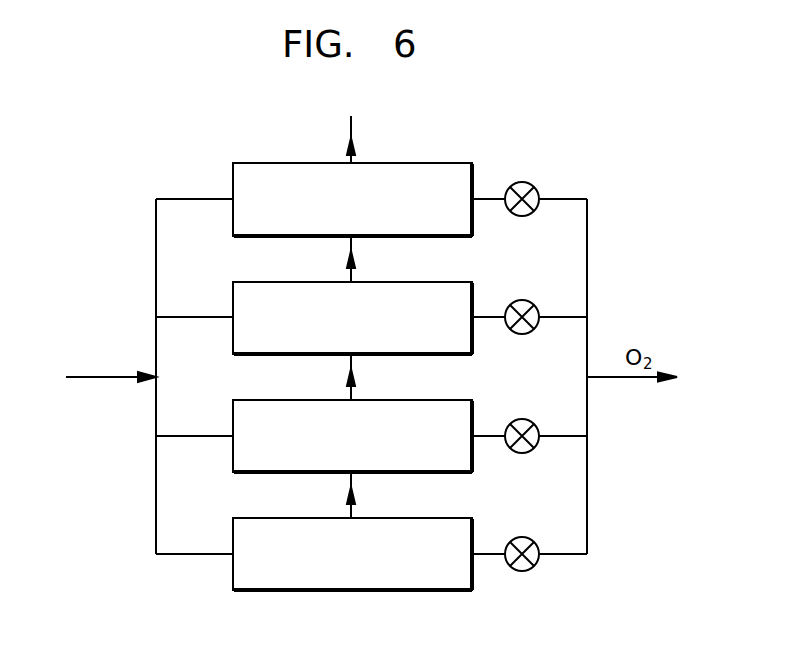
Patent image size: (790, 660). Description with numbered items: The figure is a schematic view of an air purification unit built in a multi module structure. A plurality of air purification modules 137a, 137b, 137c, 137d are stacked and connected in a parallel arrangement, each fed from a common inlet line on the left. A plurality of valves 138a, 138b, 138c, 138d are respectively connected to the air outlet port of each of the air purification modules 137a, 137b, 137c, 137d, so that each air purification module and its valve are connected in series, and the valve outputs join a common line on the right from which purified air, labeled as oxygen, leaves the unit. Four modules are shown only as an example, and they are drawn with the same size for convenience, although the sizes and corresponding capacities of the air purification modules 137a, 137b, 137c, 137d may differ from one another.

The air purification module 137a is at (388, 518).
The air purification module 137b is at (388, 400).
The air purification module 137c is at (388, 282).
The air purification module 137d is at (388, 163).
The valve 138a is at (527, 537).
The valve 138b is at (527, 419).
The valve 138c is at (527, 300).
The valve 138d is at (527, 182).